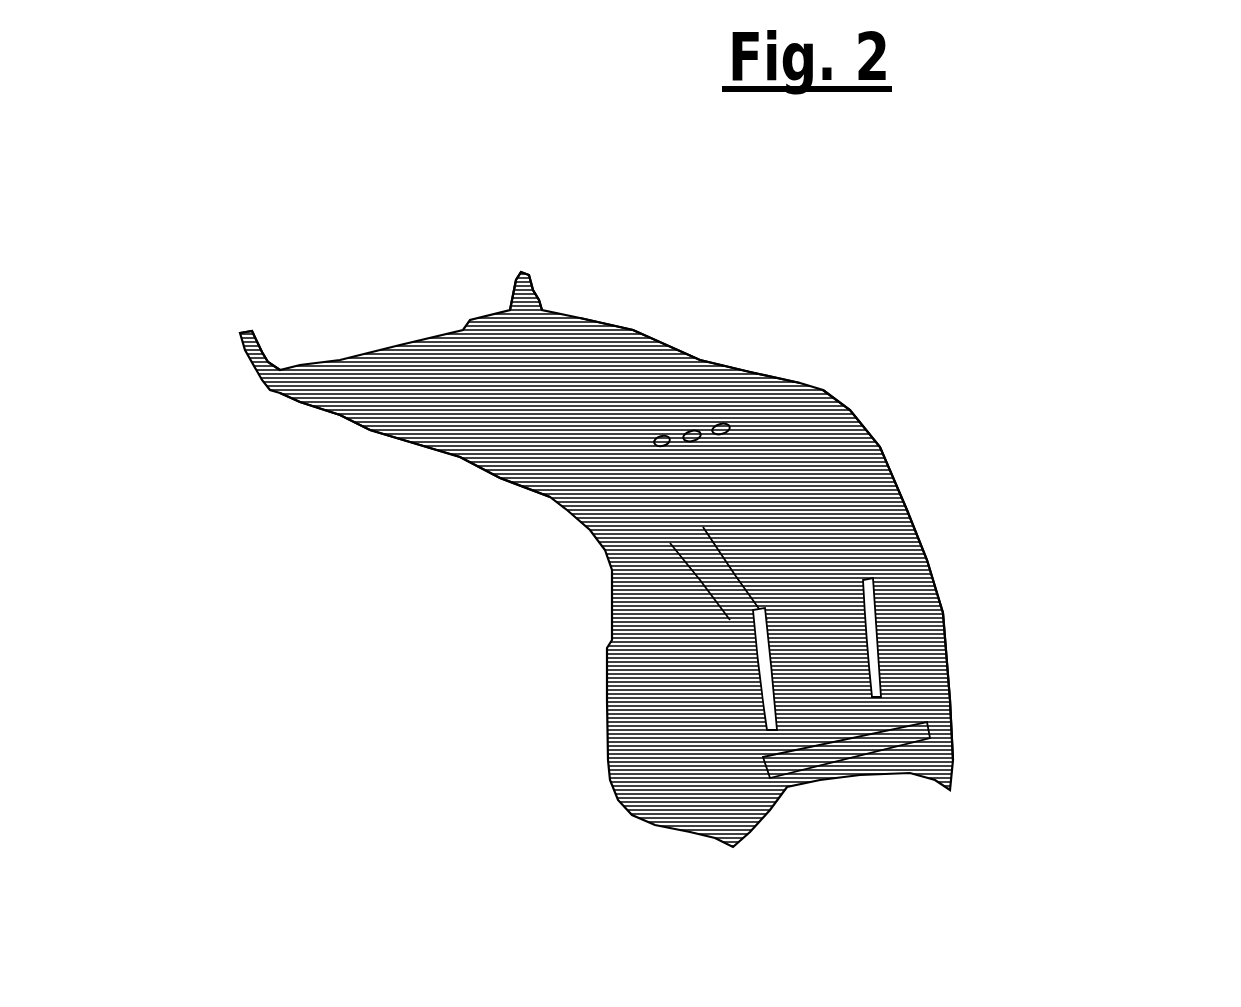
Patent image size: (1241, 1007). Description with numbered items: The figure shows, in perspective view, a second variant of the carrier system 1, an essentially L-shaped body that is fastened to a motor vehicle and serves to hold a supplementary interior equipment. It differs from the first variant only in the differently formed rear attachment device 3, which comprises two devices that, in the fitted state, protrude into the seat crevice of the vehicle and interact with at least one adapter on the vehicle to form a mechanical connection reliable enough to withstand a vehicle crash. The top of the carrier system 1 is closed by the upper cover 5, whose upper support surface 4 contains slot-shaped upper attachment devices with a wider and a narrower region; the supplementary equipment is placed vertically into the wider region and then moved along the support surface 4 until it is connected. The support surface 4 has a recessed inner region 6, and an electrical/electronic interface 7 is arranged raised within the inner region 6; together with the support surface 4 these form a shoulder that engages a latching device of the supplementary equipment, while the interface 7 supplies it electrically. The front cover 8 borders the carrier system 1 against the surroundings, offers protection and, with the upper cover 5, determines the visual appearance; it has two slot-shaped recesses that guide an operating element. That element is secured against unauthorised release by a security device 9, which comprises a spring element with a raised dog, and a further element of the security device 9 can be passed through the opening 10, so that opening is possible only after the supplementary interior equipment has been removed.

The carrier system 1 is at (397, 668).
The rear attachment device 3 is at (391, 264).
The upper support surface 4 is at (693, 357).
The upper cover 5 is at (800, 422).
The recessed inner region 6 is at (525, 385).
The electrical/electronic interface 7 is at (687, 415).
The front cover 8 is at (930, 612).
The security device 9 is at (838, 705).
The opening 10 is at (703, 517).